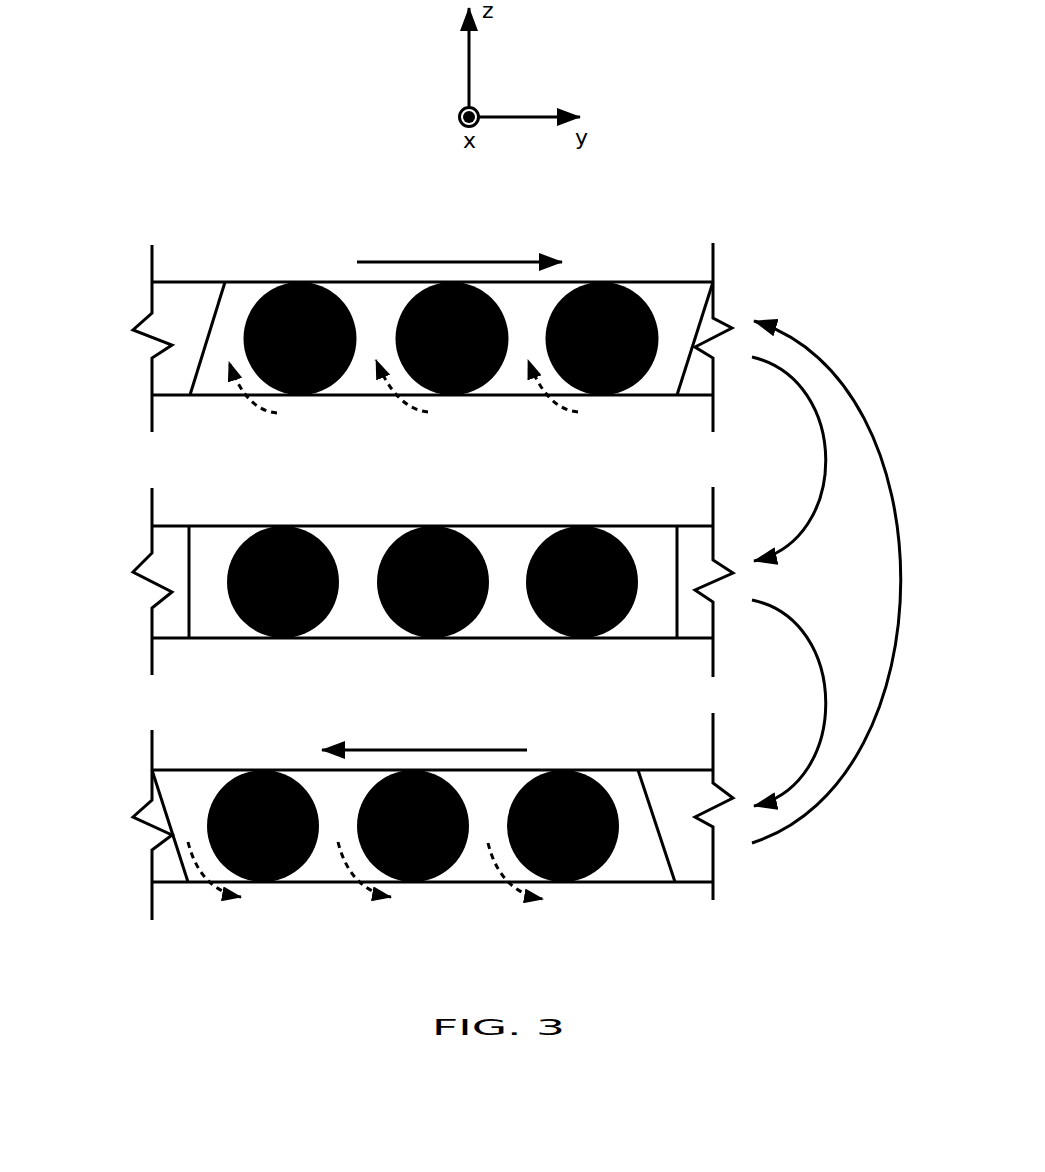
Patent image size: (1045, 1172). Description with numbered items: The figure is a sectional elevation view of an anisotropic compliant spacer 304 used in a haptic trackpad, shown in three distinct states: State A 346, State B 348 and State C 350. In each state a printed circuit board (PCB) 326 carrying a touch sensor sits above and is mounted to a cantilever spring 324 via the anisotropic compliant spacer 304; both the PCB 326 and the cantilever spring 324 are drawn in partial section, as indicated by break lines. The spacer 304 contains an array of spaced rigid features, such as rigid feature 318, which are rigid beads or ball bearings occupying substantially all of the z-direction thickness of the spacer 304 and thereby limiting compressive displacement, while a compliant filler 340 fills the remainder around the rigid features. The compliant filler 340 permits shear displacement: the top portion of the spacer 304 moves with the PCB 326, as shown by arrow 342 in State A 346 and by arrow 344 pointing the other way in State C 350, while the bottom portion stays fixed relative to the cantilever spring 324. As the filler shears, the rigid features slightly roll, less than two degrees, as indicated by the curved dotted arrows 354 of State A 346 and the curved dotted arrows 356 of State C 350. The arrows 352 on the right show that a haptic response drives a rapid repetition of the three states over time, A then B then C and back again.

The anisotropic compliant spacer 304 is at (166, 244).
The rigid feature 318 is at (433, 582).
The cantilever spring 324 is at (432, 664).
The printed circuit board (PCB) 326 is at (432, 510).
The compliant filler 340 is at (432, 582).
The arrow 342 is at (470, 262).
The arrow 344 is at (440, 750).
The State A 346 is at (77, 338).
The State B 348 is at (77, 582).
The State C 350 is at (77, 827).
The arrows 352 is at (851, 348).
The curved dotted arrows 354 is at (595, 418).
The curved dotted arrows 356 is at (564, 900).